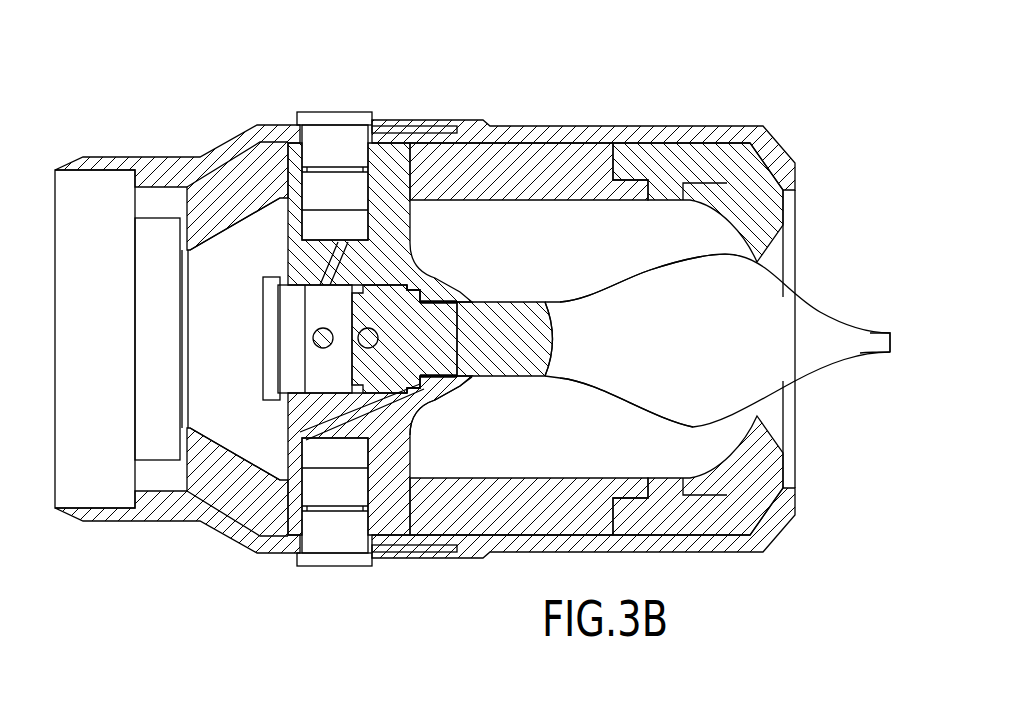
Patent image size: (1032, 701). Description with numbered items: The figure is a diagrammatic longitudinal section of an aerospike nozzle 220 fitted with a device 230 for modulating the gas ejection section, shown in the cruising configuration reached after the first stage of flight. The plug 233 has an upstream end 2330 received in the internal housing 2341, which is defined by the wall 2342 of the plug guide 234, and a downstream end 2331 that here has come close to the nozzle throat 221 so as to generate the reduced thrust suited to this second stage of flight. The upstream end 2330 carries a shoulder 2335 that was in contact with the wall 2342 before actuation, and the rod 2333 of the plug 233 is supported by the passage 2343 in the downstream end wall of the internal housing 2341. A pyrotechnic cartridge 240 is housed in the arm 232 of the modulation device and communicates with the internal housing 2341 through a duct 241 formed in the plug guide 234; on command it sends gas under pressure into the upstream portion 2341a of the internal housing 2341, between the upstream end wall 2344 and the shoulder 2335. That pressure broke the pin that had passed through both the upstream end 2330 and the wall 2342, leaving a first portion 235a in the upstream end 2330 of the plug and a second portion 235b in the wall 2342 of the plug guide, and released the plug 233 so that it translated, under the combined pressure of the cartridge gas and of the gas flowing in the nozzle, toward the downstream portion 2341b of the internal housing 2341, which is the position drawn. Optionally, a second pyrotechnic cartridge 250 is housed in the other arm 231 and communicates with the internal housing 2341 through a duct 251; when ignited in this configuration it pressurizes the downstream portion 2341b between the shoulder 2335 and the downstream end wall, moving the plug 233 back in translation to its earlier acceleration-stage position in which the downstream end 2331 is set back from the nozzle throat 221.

The nozzle 220 is at (640, 104).
The nozzle throat 221 is at (760, 259).
The device for modulating the gas ejection section 230 is at (481, 275).
The arm 231 is at (391, 472).
The arm 232 is at (390, 208).
The plug 233 is at (663, 272).
The plug guide 234 is at (440, 388).
The first portion of the pin 235a is at (302, 380).
The second portion of the pin 235b is at (313, 333).
The pyrotechnic cartridge 240 is at (355, 155).
The duct 241 is at (323, 263).
The second pyrotechnic cartridge 250 is at (355, 548).
The duct 251 is at (391, 420).
The upstream end of the plug 2330 is at (408, 352).
The downstream end of the plug 2331 is at (778, 357).
The rod of the plug 2333 is at (558, 332).
The shoulder 2335 is at (380, 297).
The internal housing 2341 is at (437, 352).
The upstream portion of the internal housing 2341a is at (307, 383).
The downstream portion of the internal housing 2341b is at (397, 384).
The wall of the plug guide 2342 is at (448, 300).
The passage 2343 is at (477, 364).
The upstream end wall of the internal housing 2344 is at (268, 343).